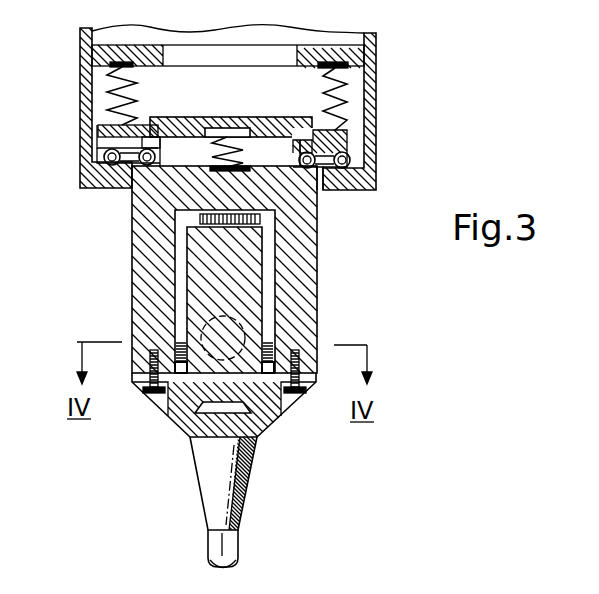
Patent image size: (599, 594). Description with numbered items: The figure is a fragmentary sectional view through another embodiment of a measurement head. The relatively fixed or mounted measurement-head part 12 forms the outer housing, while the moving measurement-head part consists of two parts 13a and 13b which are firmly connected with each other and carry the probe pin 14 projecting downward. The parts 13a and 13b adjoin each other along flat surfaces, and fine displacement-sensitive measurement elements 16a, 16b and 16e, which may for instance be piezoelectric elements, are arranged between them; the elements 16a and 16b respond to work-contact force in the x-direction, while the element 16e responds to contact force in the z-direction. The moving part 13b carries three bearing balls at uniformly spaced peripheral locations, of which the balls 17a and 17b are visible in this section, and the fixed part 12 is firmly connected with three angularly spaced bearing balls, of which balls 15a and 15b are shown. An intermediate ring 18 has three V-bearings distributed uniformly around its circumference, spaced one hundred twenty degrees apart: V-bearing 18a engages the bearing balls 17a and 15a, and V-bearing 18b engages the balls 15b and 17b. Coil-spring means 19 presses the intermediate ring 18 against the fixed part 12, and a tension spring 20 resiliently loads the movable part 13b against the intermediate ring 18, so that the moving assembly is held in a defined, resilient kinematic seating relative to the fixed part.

The fixed measurement-head part 12 is at (370, 127).
The moving measurement-head part 13a is at (268, 409).
The moving measurement-head part 13b is at (310, 258).
The probe pin 14 is at (238, 538).
The bearing ball 15a is at (86, 182).
The bearing ball 15b is at (354, 158).
The displacement-sensitive measurement element 16a is at (172, 325).
The displacement-sensitive measurement element 16b is at (277, 325).
The displacement-sensitive measurement element 16e is at (178, 218).
The bearing ball 17a is at (160, 131).
The bearing ball 17b is at (315, 167).
The intermediate ring 18 is at (263, 117).
The V-bearing 18a is at (142, 140).
The V-bearing 18b is at (323, 152).
The coil-spring means 19 is at (112, 96).
The tension spring 20 is at (237, 117).